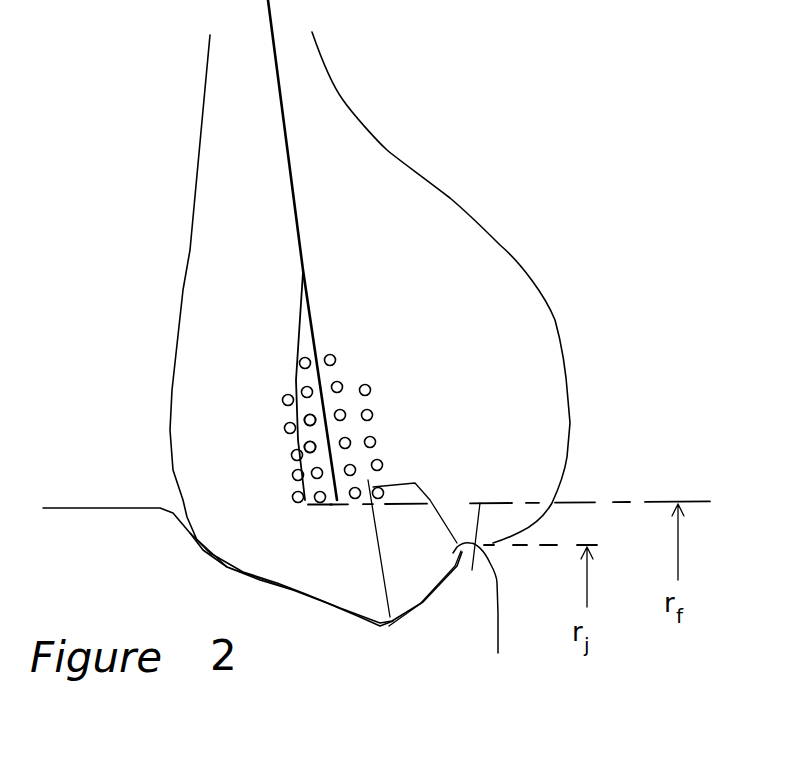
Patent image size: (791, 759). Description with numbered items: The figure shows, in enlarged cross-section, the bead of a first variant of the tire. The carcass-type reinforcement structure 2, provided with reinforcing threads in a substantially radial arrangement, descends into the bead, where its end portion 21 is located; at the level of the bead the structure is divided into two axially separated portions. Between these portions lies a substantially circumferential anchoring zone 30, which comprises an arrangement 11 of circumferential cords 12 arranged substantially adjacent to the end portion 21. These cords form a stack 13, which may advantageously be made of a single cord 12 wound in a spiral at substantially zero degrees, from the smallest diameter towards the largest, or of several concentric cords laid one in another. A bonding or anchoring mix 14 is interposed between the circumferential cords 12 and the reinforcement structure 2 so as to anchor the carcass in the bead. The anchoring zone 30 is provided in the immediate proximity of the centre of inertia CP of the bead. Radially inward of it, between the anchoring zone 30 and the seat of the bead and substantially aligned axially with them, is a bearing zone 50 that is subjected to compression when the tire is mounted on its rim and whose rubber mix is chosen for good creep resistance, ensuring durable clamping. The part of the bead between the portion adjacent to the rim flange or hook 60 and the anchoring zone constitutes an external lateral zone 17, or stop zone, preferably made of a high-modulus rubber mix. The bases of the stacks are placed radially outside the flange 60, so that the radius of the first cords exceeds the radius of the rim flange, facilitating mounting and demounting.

The carcass-type reinforcement structure 2 is at (300, 193).
The arrangement of circumferential cords 11 is at (258, 411).
The circumferential cords 12 is at (335, 356).
The end portion of the reinforcement structure 21 is at (330, 437).
The centre of inertia of the bead CP is at (375, 443).
The anchoring zone 30 is at (317, 417).
The bonding mix 14 is at (318, 432).
The stack of circumferential cords 13 is at (326, 521).
The bearing zone 50 is at (287, 573).
The external lateral zone 17 is at (433, 545).
The rim flange 60 is at (480, 503).